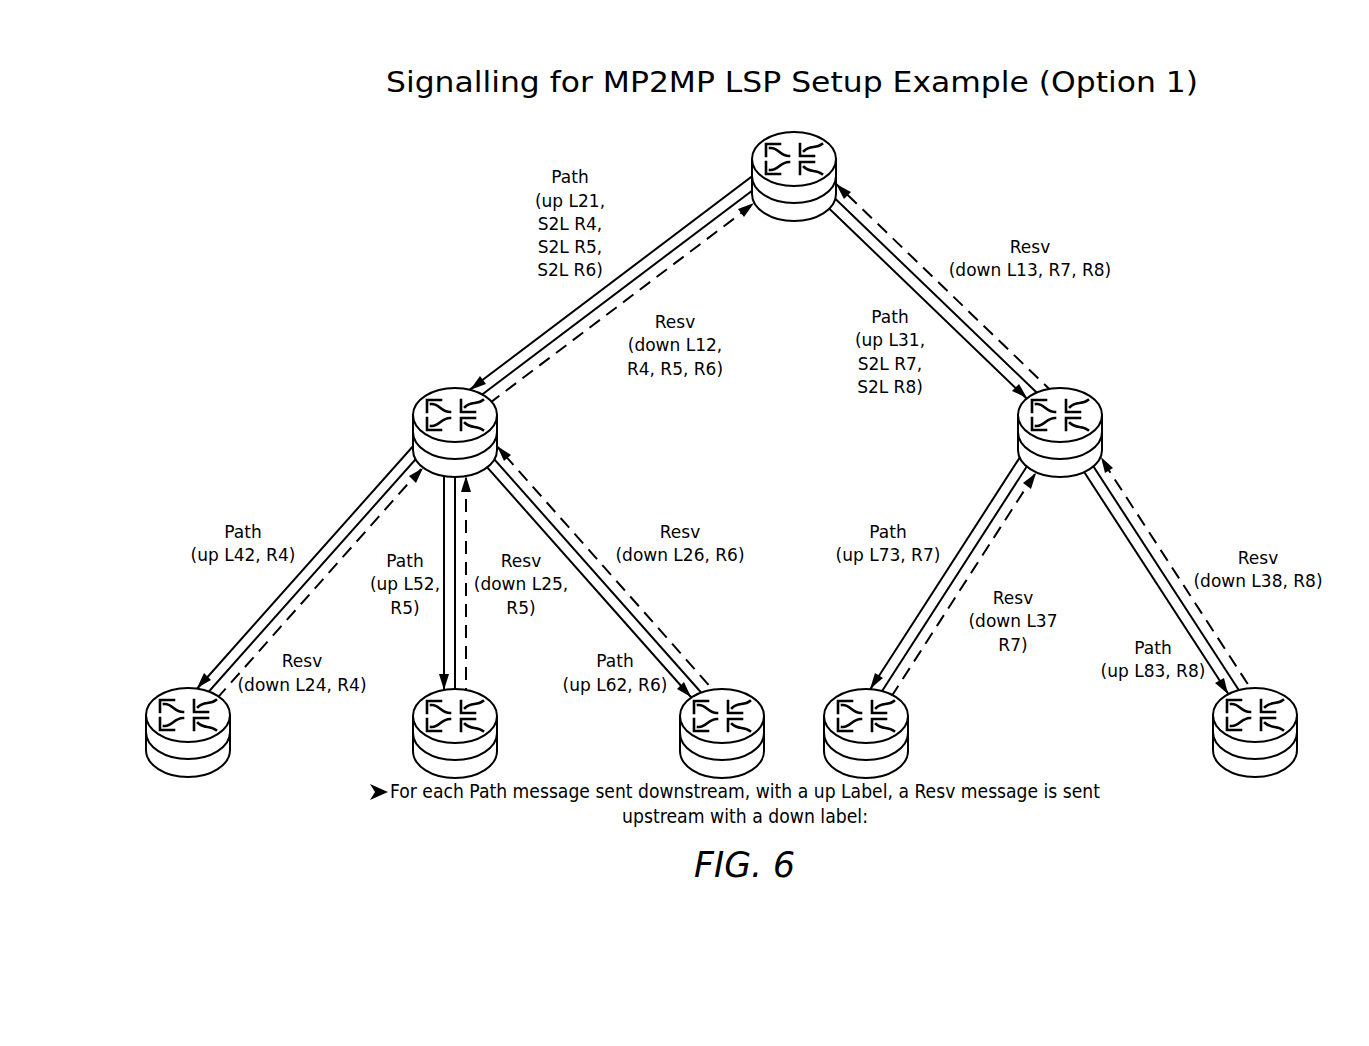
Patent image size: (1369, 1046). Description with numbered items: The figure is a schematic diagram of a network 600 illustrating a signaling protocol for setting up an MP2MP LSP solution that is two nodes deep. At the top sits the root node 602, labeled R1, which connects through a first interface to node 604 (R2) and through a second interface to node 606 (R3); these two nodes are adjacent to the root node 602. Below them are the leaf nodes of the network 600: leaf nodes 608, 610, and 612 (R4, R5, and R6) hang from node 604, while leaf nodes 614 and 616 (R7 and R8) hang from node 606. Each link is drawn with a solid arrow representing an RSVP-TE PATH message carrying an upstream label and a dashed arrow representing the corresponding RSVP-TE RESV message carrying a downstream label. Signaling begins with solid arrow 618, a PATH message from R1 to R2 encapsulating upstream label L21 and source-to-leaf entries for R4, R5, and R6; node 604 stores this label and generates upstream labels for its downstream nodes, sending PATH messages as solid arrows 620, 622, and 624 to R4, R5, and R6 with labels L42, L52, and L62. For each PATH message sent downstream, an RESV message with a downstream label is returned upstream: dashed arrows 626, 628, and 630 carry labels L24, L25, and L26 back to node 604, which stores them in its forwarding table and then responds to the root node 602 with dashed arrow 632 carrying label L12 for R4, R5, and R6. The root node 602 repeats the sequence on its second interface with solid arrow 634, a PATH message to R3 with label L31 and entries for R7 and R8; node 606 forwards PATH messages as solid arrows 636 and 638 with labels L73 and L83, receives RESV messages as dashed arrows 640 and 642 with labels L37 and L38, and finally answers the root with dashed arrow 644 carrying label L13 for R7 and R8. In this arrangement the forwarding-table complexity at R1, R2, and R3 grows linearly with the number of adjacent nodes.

The network 600 is at (428, 182).
The root node 602 is at (838, 161).
The node 604 is at (498, 425).
The node 606 is at (1103, 431).
The leaf node 608 is at (231, 731).
The leaf node 610 is at (498, 731).
The leaf node 612 is at (746, 693).
The leaf node 614 is at (909, 731).
The leaf node 616 is at (1298, 731).
The solid arrow 618 is at (532, 340).
The solid arrow 620 is at (346, 506).
The solid arrow 622 is at (442, 655).
The solid arrow 624 is at (617, 612).
The dashed arrow 626 is at (296, 615).
The dashed arrow 628 is at (469, 655).
The dashed arrow 630 is at (564, 498).
The dashed arrow 632 is at (698, 249).
The solid arrow 634 is at (882, 255).
The solid arrow 636 is at (998, 488).
The solid arrow 638 is at (1159, 585).
The dashed arrow 640 is at (995, 541).
The dashed arrow 642 is at (1150, 514).
The dashed arrow 644 is at (903, 243).